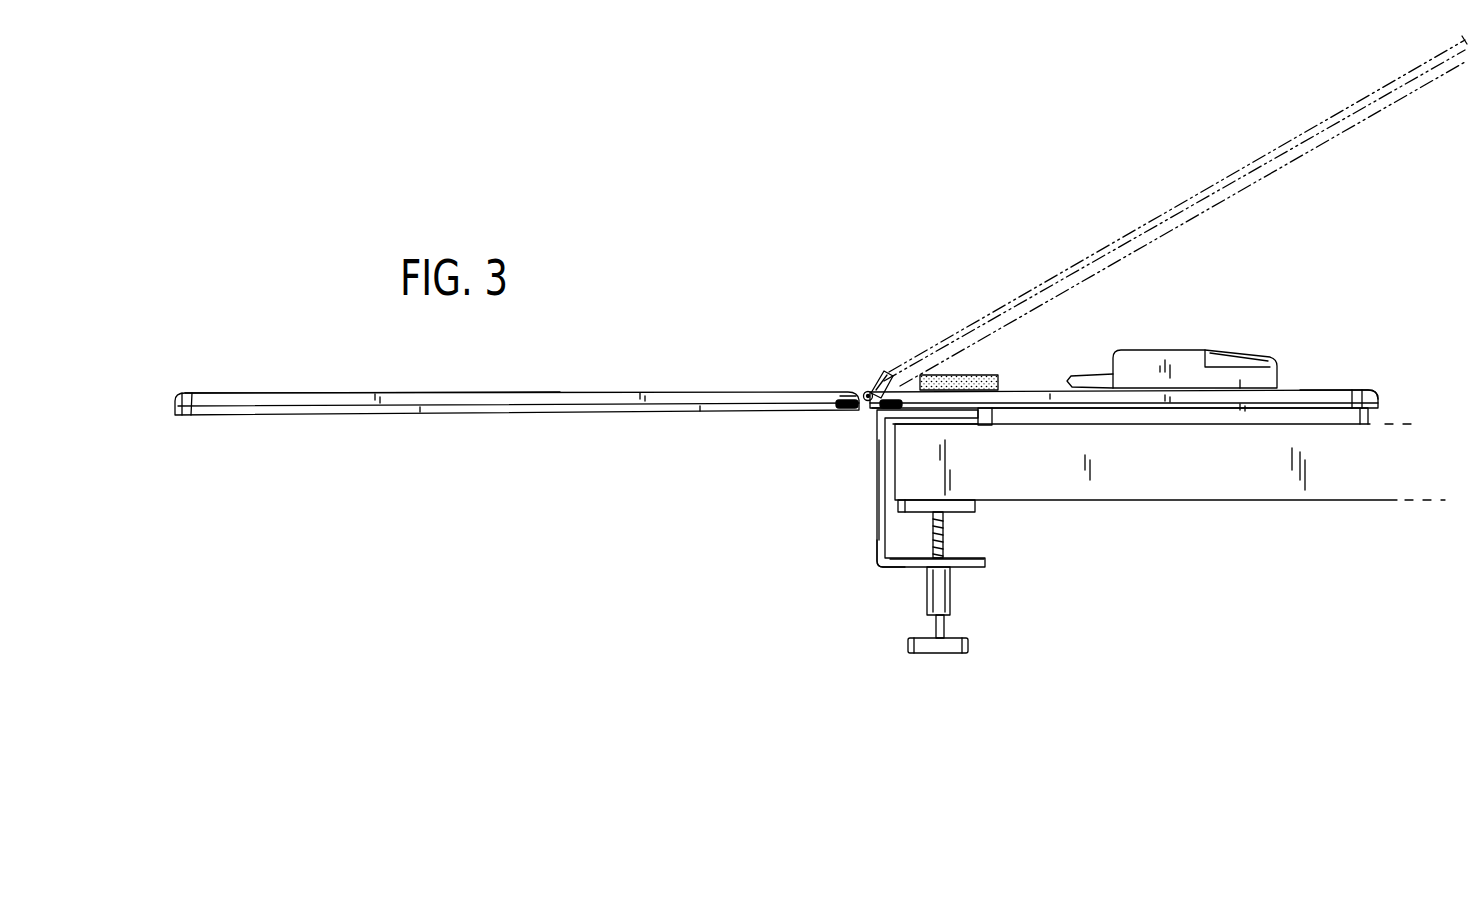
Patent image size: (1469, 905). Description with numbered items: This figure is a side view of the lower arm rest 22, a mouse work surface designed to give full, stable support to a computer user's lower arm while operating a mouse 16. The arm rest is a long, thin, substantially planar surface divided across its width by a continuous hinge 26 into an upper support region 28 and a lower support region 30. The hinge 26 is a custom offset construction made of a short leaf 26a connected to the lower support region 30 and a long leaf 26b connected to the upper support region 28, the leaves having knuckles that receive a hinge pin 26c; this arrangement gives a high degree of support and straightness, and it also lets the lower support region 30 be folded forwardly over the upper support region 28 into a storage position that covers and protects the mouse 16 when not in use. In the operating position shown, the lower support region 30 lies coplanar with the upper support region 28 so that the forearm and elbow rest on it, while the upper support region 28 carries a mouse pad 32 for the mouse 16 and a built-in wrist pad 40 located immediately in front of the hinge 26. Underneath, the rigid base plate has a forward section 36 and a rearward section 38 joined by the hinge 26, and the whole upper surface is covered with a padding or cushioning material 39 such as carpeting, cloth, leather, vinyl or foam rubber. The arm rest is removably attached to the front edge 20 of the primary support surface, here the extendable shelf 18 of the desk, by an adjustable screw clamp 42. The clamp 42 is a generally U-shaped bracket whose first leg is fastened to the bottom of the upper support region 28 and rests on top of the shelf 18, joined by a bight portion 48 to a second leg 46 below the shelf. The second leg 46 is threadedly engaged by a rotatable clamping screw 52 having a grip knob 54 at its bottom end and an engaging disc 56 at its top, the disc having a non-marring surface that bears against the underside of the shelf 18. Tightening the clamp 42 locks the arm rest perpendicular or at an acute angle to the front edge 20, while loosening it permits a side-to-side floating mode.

The mouse 16 is at (1188, 354).
The shelf 18 is at (1172, 488).
The front edge 20 is at (897, 487).
The lower arm rest 22 is at (884, 538).
The hinge 26 is at (866, 391).
The short leaf 26a is at (842, 397).
The long leaf 26b is at (885, 373).
The hinge pin 26c is at (862, 409).
The upper support region 28 is at (1372, 391).
The lower support region 30 is at (185, 398).
The mouse pad 32 is at (1325, 390).
The forward section 36 is at (1283, 416).
The rearward section 38 is at (512, 410).
The padding or cushioning material 39 is at (562, 392).
The wrist pad 40 is at (979, 376).
The adjustable screw clamp 42 is at (870, 568).
The second leg 46 is at (978, 565).
The bight portion 48 is at (880, 518).
The clamping screw 52 is at (941, 548).
The grip knob 54 is at (969, 647).
The engaging disc 56 is at (966, 504).